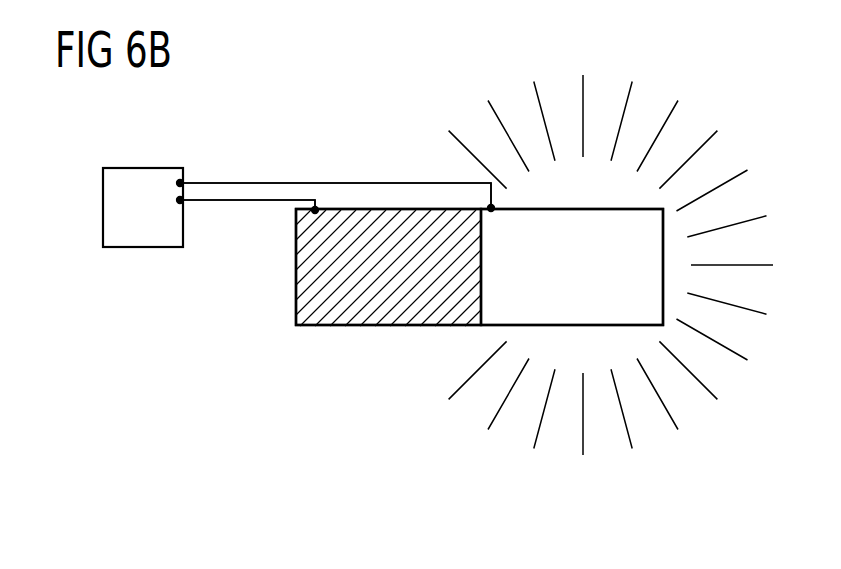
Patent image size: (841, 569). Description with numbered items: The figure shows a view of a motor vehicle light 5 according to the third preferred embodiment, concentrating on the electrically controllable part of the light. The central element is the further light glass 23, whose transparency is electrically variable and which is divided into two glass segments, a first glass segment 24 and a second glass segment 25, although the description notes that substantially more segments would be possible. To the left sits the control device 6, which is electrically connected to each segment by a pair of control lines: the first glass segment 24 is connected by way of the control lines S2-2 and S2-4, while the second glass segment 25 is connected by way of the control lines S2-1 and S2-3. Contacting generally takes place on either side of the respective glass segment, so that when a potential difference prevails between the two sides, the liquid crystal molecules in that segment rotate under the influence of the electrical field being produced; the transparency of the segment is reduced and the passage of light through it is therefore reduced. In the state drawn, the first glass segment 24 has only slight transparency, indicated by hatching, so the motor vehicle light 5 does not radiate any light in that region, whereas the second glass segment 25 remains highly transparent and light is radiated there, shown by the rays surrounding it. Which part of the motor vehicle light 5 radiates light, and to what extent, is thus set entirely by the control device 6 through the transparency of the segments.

The motor vehicle light 5 is at (232, 482).
The control device 6 is at (103, 208).
The further light glass 23 is at (534, 297).
The first glass segment 24 is at (350, 310).
The second glass segment 25 is at (650, 277).
The control line S2-1 is at (332, 183).
The control line S2-2 is at (247, 200).
The control line S2-3 is at (332, 183).
The control line S2-4 is at (247, 200).